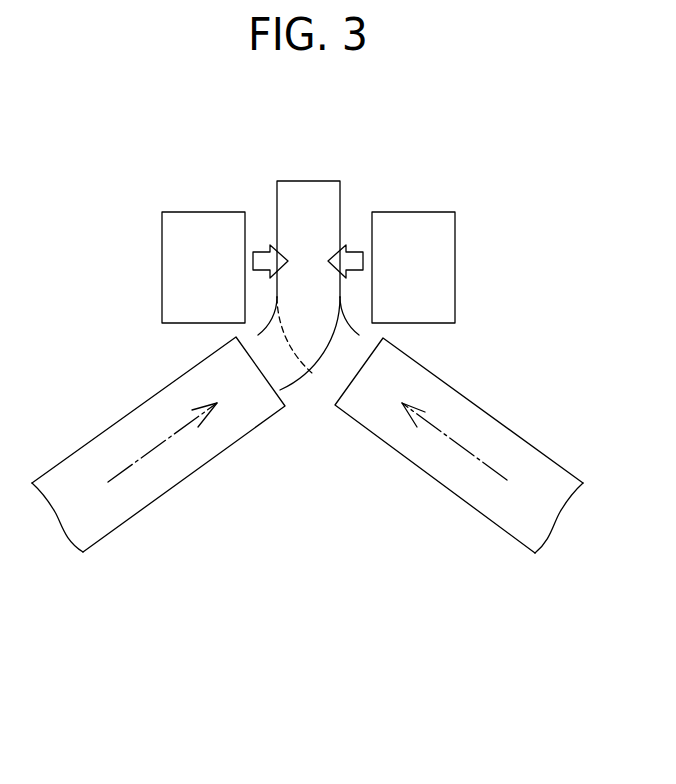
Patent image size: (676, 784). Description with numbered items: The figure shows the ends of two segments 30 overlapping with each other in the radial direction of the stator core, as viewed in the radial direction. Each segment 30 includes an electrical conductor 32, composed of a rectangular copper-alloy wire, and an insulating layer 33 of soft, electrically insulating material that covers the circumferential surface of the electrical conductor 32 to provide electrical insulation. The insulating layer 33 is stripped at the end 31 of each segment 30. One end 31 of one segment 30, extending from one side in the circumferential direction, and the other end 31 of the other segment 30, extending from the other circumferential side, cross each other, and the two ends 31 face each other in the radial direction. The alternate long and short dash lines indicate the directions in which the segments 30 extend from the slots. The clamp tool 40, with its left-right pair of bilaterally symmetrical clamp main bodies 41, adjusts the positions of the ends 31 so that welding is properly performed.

The segment 30 is at (111, 548).
The end 31 is at (310, 188).
The electrical conductor 32 is at (265, 340).
The insulating layer 33 is at (478, 490).
The clamp tool 40 is at (440, 190).
The clamp main body 41 is at (178, 190).